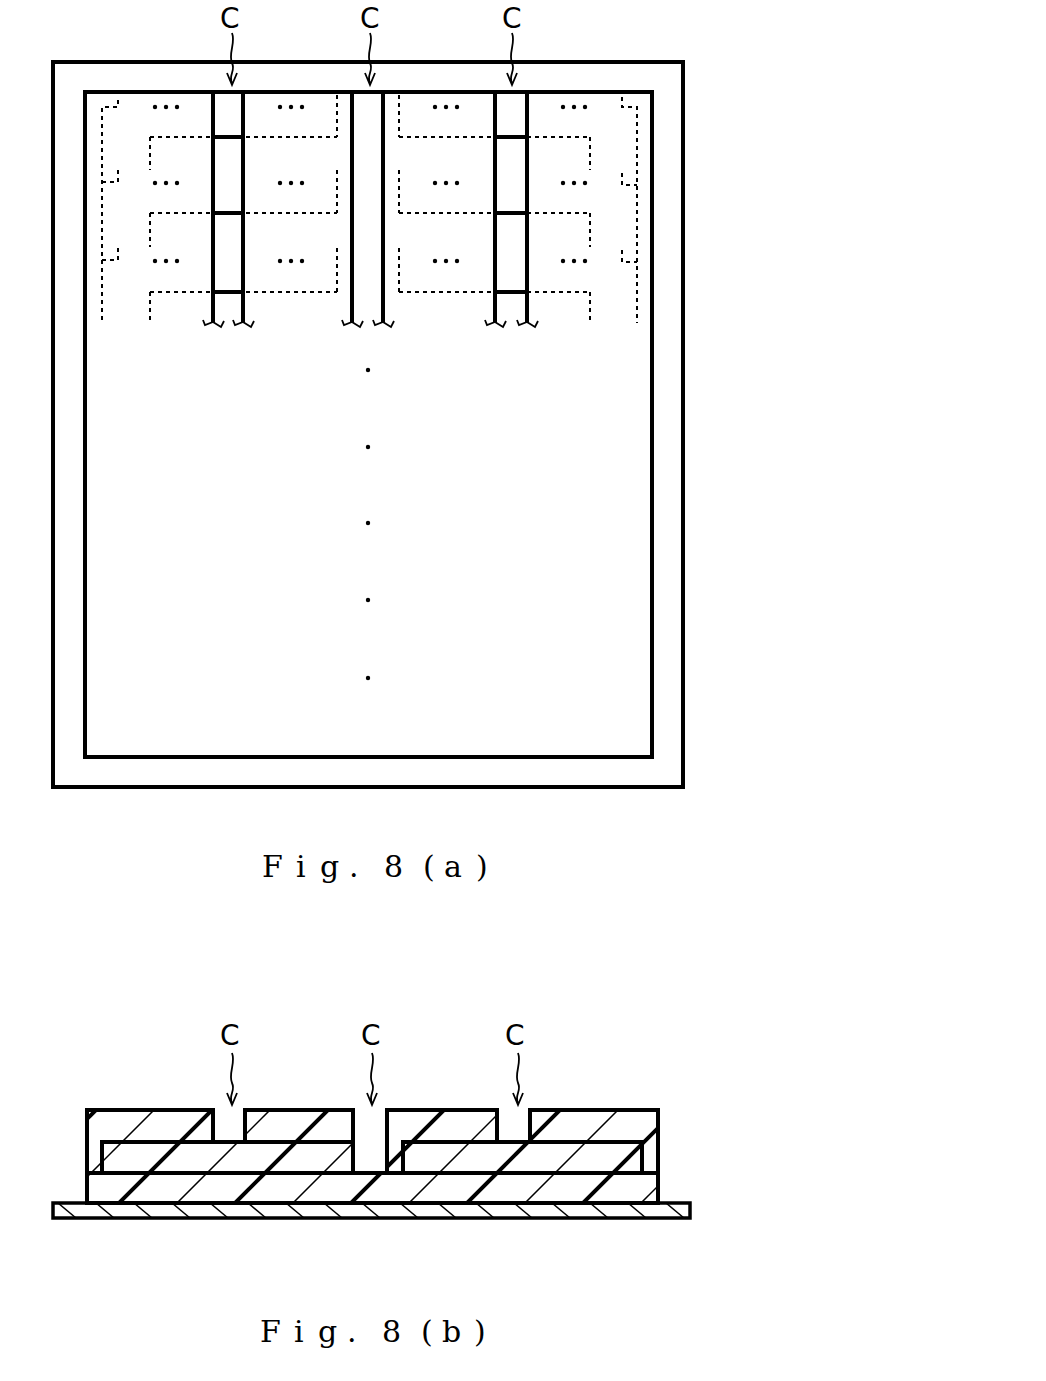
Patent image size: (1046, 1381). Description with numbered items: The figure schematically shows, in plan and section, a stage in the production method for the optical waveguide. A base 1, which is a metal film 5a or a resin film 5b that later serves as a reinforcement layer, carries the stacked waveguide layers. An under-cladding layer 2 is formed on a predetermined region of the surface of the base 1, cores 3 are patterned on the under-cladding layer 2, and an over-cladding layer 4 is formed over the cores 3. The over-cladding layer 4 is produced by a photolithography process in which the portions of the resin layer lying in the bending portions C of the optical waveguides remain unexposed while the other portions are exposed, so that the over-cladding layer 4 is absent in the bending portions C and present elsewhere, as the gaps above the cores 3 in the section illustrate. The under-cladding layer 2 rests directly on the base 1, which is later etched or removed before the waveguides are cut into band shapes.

In FIG. 8A, the base 1 is at (668, 78).
In FIG. 8B, the base 1 is at (680, 1207).
In FIG. 8A, the metal film 5a is at (479, 424).
In FIG. 8B, the metal film 5a is at (464, 1220).
In FIG. 8A, the resin film 5b is at (479, 424).
In FIG. 8B, the resin film 5b is at (464, 1220).
In FIG. 8B, the under-cladding layer 2 is at (642, 1187).
In FIG. 8A, the cores 3 is at (563, 213).
In FIG. 8B, the cores 3 is at (627, 1157).
In FIG. 8A, the over-cladding layer 4 is at (620, 293).
In FIG. 8B, the over-cladding layer 4 is at (630, 1120).